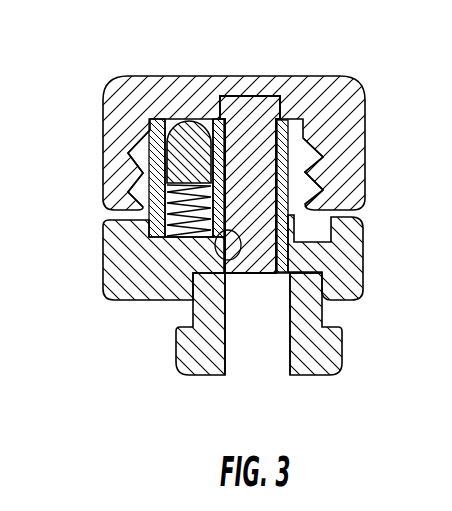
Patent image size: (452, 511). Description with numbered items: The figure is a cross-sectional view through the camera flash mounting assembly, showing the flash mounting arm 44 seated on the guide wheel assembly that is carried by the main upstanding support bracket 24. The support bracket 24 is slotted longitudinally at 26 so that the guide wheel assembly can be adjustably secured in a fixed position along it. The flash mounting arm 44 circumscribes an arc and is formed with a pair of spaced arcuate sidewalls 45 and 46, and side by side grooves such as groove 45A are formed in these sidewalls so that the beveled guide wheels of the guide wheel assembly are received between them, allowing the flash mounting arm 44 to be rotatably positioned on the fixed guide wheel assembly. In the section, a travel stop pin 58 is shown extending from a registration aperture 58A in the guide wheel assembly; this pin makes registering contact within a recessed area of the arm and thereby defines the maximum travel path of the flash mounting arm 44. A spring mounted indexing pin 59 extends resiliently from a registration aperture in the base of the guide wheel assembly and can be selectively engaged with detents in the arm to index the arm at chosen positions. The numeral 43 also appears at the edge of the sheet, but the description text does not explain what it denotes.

The main upstanding support bracket 24 is at (183, 337).
The longitudinal slot 26 is at (227, 350).
The flash mounting arm 44 is at (370, 96).
The arcuate sidewall 45 is at (118, 158).
The arcuate sidewall 46 is at (352, 164).
The travel stop pin 58 is at (283, 97).
The registration aperture 58A is at (228, 256).
The spring mounted indexing pin 59 is at (173, 138).
The adjacent figure element 43 is at (444, 432).
The groove 45A is at (444, 476).